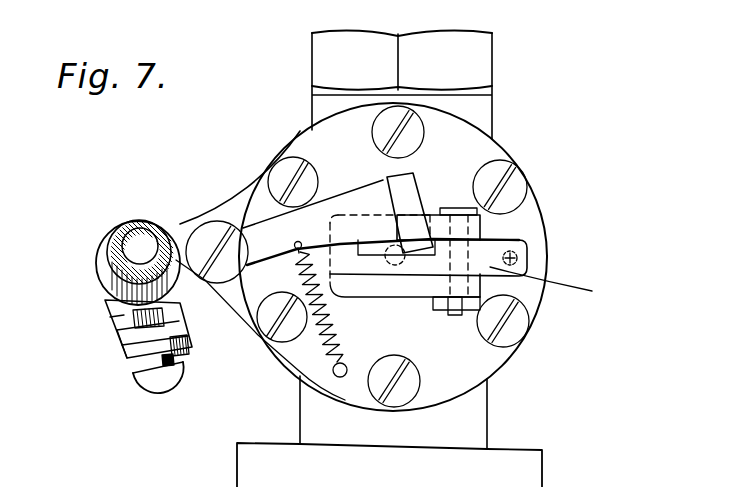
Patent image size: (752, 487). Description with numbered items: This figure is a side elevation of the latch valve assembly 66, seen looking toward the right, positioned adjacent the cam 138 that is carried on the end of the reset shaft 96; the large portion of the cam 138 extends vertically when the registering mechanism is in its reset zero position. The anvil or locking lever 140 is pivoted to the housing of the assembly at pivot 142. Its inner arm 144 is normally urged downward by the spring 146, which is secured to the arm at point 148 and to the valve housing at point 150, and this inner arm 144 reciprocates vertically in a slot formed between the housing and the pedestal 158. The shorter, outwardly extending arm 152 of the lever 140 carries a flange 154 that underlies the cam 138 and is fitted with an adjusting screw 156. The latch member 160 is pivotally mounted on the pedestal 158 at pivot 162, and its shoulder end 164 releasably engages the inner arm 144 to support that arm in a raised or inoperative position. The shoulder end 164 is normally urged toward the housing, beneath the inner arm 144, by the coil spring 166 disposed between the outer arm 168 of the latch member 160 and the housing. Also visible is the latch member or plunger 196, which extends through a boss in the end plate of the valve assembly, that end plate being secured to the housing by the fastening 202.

The latch valve assembly 66 is at (493, 103).
The reset shaft 96 is at (142, 222).
The cam 138 is at (103, 273).
The anvil or locking lever 140 is at (266, 228).
The pivot 142 is at (218, 221).
The inner arm 144 is at (320, 179).
The spring 146 is at (334, 346).
The spring attachment point on arm 148 is at (266, 270).
The spring attachment point on housing 150 is at (333, 373).
The outwardly extending arm 152 is at (120, 313).
The flange 154 is at (118, 332).
The adjusting screw 156 is at (167, 374).
The pedestal 158 is at (480, 233).
The latch member 160 is at (523, 243).
The pivot 162 is at (457, 208).
The shoulder end 164 is at (433, 306).
The coil spring 166 is at (530, 258).
The outer arm 168 is at (557, 290).
The latch member or plunger 196 is at (390, 245).
The fastening 202 is at (513, 328).